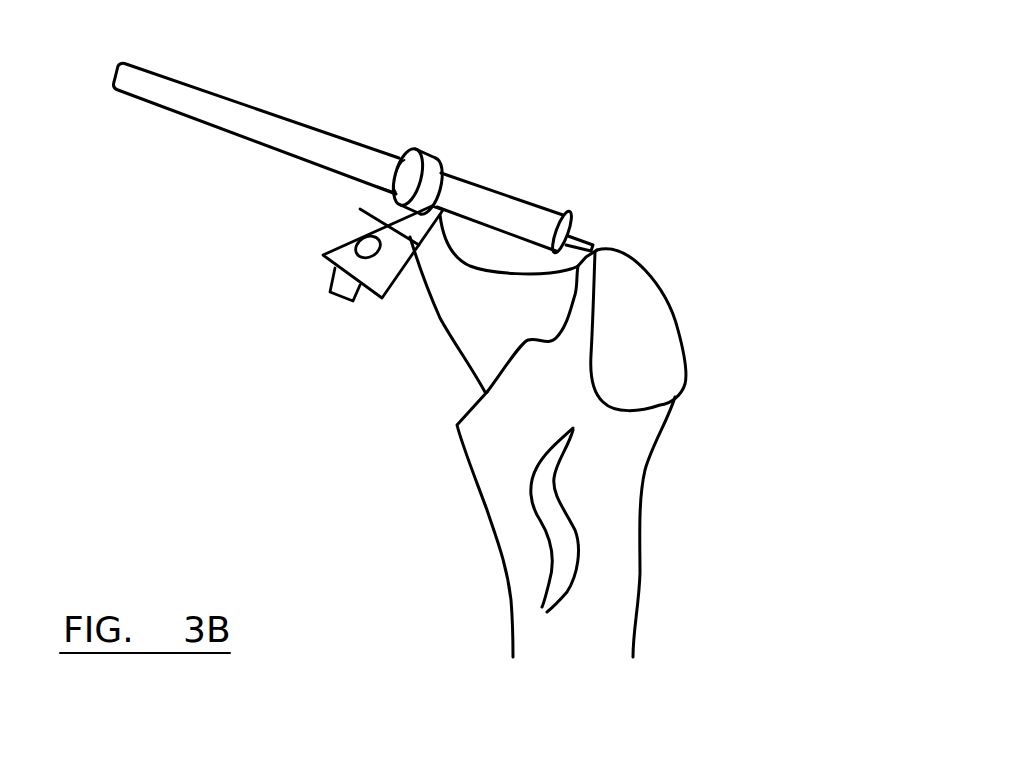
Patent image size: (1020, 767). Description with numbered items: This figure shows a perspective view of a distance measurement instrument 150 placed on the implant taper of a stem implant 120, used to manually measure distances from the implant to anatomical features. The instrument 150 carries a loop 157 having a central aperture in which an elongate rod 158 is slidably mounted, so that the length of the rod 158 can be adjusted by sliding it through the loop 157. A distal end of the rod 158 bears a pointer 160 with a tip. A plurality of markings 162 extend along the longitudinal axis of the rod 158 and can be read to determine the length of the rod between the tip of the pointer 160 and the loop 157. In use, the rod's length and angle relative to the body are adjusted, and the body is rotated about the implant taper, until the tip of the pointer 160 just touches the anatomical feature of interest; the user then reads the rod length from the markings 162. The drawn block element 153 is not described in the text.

The stem implant 120 is at (477, 305).
The distance measurement instrument 150 is at (349, 221).
The clamp block 153 is at (378, 295).
The loop 157 is at (440, 152).
The elongate rod 158 is at (160, 97).
The pointer 160 is at (593, 247).
The markings 162 is at (265, 113).